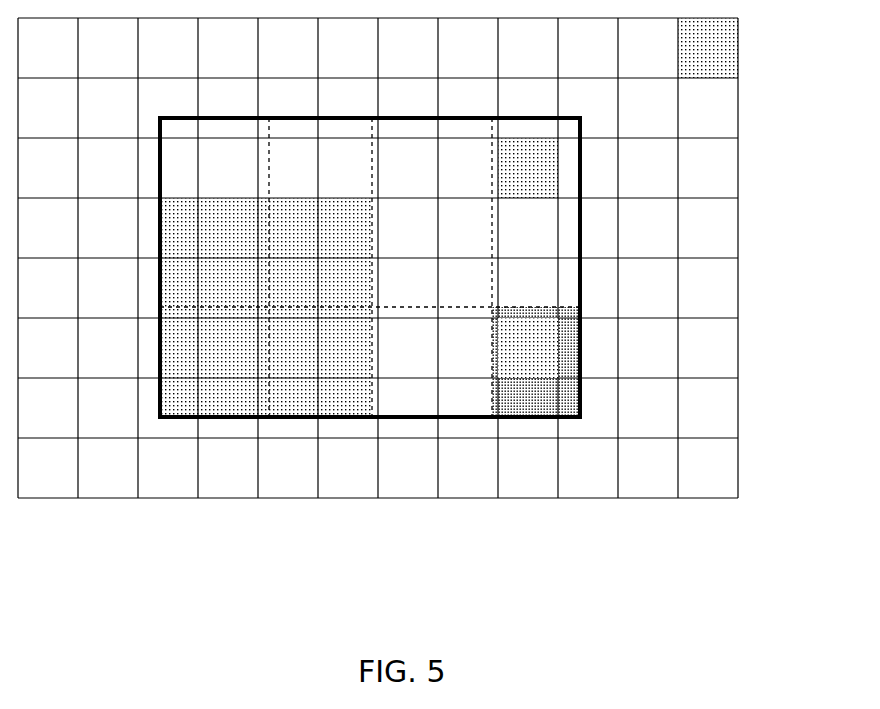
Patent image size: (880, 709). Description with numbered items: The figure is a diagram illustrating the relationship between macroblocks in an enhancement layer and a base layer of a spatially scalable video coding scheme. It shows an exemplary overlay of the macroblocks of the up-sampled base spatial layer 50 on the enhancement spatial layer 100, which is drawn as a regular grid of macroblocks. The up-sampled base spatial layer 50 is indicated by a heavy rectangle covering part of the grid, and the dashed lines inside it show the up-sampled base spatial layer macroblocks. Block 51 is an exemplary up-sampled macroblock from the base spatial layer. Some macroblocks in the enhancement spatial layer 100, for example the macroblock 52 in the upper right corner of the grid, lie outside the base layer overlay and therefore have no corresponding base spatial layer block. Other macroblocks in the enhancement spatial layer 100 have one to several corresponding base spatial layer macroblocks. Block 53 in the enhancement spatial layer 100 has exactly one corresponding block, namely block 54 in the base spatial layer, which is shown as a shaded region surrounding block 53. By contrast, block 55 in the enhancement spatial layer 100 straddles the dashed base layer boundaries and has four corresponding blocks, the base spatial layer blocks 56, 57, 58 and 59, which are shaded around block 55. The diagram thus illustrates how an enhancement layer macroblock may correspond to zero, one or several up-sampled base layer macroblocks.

The enhancement spatial layer 100 is at (748, 364).
The up-sampled base spatial layer 50 is at (590, 290).
The up-sampled macroblock 51 is at (528, 168).
The macroblock 52 is at (708, 48).
The block 53 is at (528, 348).
The block 54 is at (538, 400).
The block 55 is at (266, 288).
The base spatial layer block 56 is at (214, 228).
The base spatial layer block 57 is at (320, 228).
The base spatial layer block 58 is at (320, 367).
The base spatial layer block 59 is at (214, 367).